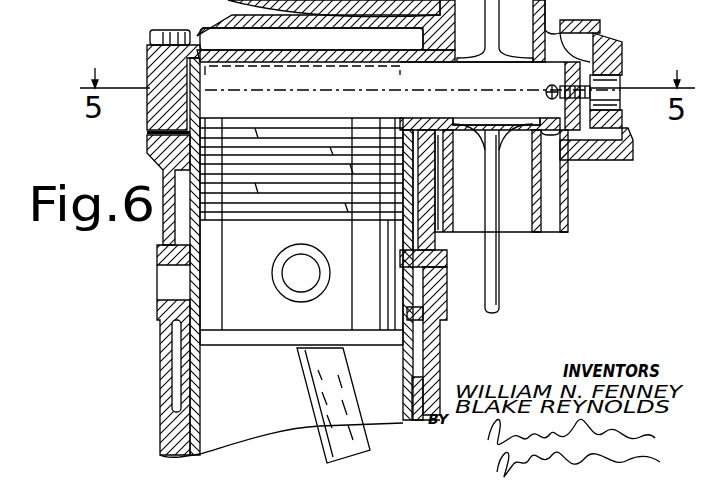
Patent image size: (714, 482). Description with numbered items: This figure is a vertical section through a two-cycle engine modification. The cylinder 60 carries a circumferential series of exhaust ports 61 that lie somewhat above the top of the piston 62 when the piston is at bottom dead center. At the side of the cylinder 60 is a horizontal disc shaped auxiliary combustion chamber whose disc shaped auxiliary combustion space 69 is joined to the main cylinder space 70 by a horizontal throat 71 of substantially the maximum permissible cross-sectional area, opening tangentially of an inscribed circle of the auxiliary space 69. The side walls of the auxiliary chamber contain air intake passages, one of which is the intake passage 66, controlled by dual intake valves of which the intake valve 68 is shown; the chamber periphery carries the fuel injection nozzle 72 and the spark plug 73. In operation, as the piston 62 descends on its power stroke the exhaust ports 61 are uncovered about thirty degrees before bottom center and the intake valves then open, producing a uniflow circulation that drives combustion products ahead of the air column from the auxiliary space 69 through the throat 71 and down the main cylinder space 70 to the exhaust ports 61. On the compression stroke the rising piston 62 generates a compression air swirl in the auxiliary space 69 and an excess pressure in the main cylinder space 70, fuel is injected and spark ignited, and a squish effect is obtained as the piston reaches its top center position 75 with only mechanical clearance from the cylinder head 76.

The cylinder 60 is at (190, 332).
The exhaust ports 61 is at (190, 270).
The piston 62 is at (247, 310).
The air intake passage 66 is at (530, 215).
The intake valve 68 is at (518, 133).
The auxiliary combustion space 69 is at (490, 94).
The main cylinder space 70 is at (335, 115).
The throat 71 is at (428, 113).
The fuel injection nozzle 72 is at (577, 55).
The spark plug 73 is at (610, 88).
The top center position 75 is at (265, 67).
The cylinder head 76 is at (327, 52).